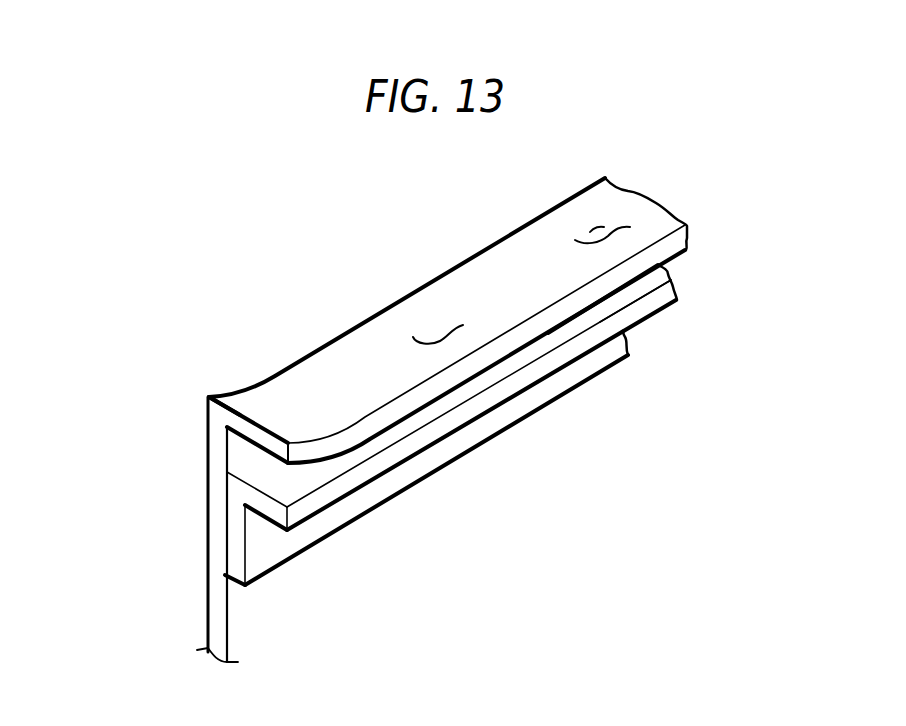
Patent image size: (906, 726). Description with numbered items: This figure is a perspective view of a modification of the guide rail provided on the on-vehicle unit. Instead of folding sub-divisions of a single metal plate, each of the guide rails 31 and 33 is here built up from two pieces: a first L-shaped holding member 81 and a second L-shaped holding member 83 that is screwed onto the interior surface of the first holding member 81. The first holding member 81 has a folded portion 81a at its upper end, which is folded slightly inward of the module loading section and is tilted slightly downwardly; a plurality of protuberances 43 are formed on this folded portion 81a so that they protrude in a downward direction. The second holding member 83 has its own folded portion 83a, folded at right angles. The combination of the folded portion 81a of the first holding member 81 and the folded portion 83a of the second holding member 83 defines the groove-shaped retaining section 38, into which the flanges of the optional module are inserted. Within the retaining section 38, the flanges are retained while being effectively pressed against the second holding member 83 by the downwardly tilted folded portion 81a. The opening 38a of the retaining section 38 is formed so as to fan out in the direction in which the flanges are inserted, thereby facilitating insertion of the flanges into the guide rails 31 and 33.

The guide rail 31 is at (352, 298).
The guide rail 33 is at (448, 320).
The protuberances 43 is at (427, 328).
The first L-shaped holding member 81 is at (208, 487).
The folded portion 81a is at (250, 428).
The retaining section 38 is at (502, 370).
The opening 38a is at (296, 494).
The second L-shaped holding member 83 is at (245, 543).
The folded portion 83a is at (635, 304).